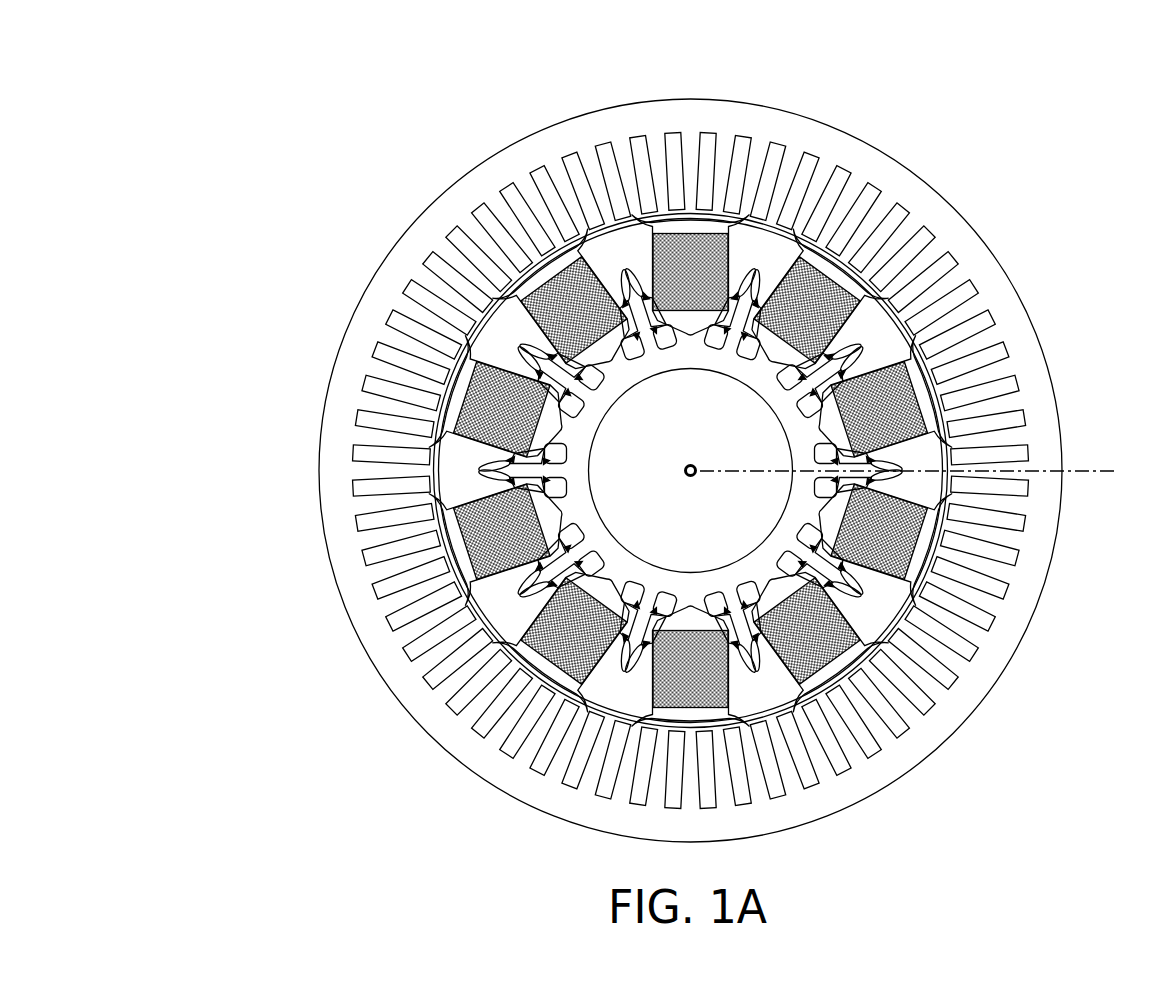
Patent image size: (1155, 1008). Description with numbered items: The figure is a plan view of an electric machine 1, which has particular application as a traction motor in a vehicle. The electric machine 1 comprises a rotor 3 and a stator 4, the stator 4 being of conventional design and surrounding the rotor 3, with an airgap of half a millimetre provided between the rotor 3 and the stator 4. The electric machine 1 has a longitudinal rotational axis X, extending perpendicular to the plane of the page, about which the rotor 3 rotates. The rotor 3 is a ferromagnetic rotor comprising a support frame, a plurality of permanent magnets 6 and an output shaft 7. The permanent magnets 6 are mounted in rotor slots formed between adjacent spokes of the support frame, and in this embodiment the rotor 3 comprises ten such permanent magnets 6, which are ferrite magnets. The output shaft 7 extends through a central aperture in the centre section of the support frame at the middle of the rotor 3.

The electric machine 1 is at (701, 427).
The rotor 3 is at (701, 508).
The stator 4 is at (820, 143).
The permanent magnets 6 is at (817, 645).
The output shaft 7 is at (762, 442).